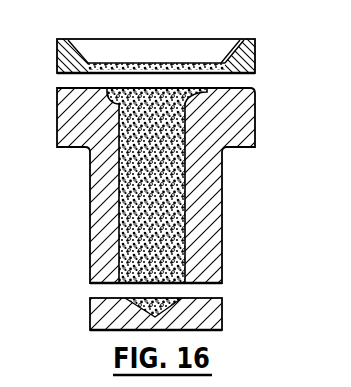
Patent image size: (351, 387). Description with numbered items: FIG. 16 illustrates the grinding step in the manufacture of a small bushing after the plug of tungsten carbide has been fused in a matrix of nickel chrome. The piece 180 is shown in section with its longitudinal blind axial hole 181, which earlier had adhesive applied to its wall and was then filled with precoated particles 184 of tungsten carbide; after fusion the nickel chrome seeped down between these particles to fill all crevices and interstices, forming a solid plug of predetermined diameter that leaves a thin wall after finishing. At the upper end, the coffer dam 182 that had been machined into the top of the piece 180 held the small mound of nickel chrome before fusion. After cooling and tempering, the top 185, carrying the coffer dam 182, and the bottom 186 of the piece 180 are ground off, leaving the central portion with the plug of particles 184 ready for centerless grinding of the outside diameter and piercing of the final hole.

The piece 180 is at (205, 222).
The longitudinal blind axial hole 181 is at (127, 208).
The coffer dam 182 is at (237, 50).
The precoated particles 184 is at (168, 178).
The top 185 is at (256, 57).
The bottom 186 is at (222, 311).